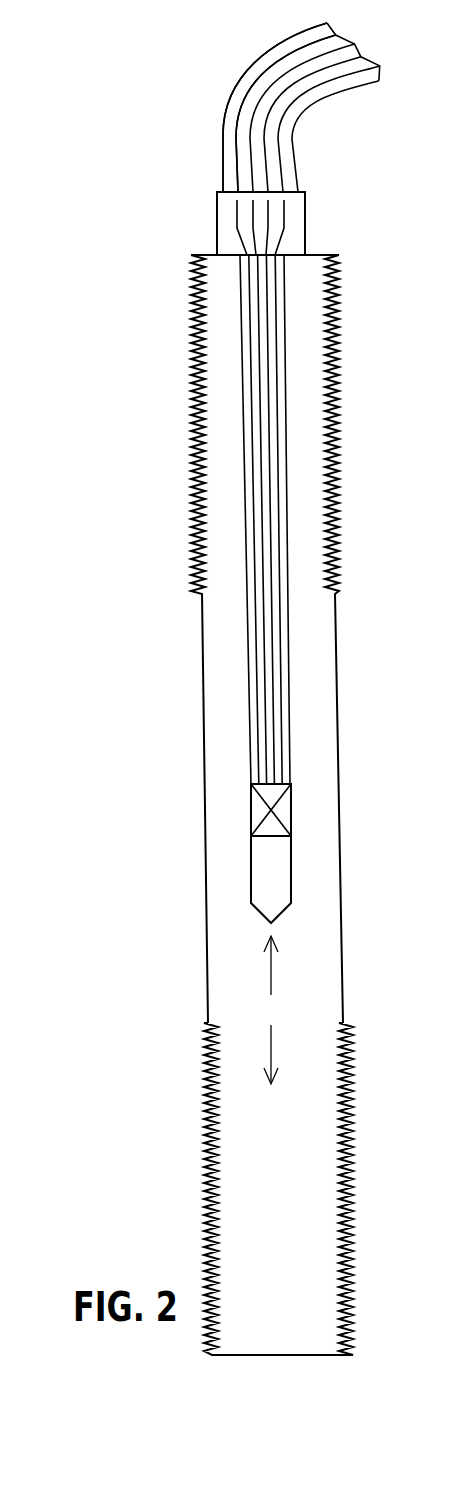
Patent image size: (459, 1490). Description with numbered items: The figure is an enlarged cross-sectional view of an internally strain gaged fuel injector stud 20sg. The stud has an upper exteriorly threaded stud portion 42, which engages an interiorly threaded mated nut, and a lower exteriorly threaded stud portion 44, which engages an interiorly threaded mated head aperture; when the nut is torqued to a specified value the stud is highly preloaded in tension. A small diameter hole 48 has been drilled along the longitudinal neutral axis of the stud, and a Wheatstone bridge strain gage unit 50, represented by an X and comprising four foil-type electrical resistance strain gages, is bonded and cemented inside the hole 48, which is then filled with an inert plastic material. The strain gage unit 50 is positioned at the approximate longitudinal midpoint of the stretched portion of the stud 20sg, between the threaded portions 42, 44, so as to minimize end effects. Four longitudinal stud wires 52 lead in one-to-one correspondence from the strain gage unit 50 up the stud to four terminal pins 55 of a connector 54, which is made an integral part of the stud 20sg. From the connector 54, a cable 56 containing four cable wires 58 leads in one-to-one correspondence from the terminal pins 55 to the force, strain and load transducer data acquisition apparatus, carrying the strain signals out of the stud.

The internally strain gaged stud 20sg is at (227, 689).
The upper exteriorly threaded stud portion 42 is at (335, 343).
The lower exteriorly threaded stud portion 44 is at (352, 1075).
The small diameter hole 48 is at (282, 873).
The Wheatstone bridge strain gage unit 50 is at (282, 812).
The longitudinal stud wires 52 is at (283, 657).
The connector 54 is at (308, 222).
The terminal pins 55 is at (230, 220).
The cable 56 is at (311, 121).
The cable wires 58 is at (252, 84).